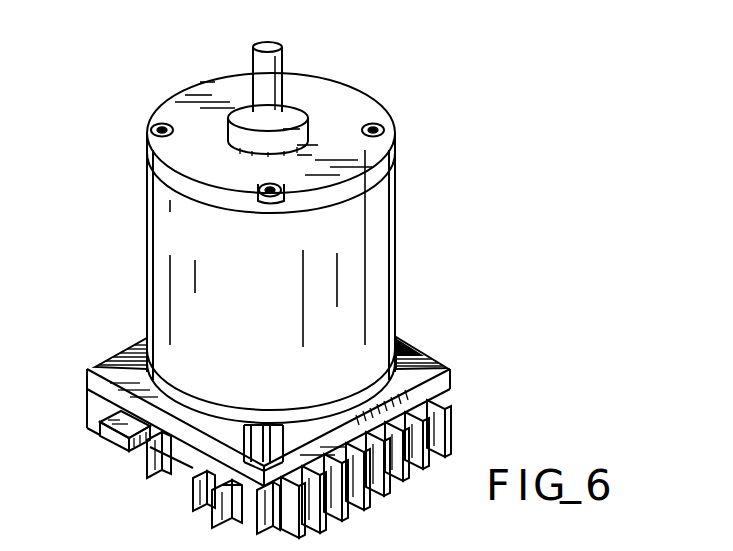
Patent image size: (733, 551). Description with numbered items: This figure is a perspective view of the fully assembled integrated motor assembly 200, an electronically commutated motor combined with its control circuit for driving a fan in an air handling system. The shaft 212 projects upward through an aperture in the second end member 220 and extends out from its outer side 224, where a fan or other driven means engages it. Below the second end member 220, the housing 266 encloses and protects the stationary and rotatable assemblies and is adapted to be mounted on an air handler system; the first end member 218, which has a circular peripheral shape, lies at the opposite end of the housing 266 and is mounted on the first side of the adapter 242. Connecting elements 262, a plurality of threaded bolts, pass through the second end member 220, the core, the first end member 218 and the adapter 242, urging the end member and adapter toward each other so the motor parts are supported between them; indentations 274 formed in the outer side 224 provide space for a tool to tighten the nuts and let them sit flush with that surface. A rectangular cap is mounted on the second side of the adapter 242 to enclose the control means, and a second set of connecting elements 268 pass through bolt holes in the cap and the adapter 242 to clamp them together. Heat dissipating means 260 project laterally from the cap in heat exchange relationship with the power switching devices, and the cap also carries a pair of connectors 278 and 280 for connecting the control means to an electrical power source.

The integrated motor assembly 200 is at (494, 118).
The shaft 212 is at (254, 64).
The first end member 218 is at (446, 391).
The second end member 220 is at (352, 88).
The outer side 224 is at (226, 83).
The adapter 242 is at (97, 382).
The heat dissipating means 260 is at (284, 475).
The connecting elements 262 is at (167, 118).
The housing 266 is at (394, 264).
The second set of connecting elements 268 is at (102, 364).
The indentations 274 is at (150, 131).
The connector 278 is at (120, 440).
The connector 280 is at (217, 510).